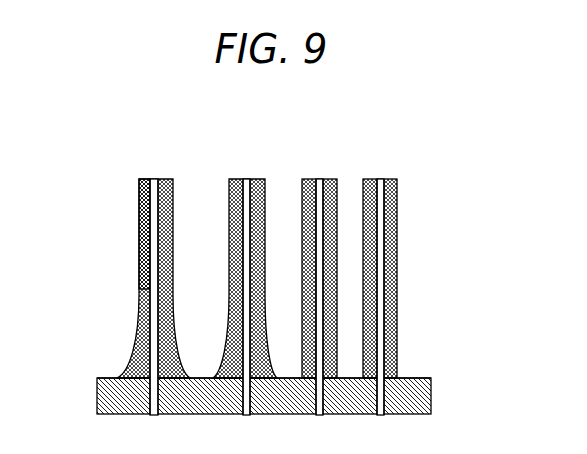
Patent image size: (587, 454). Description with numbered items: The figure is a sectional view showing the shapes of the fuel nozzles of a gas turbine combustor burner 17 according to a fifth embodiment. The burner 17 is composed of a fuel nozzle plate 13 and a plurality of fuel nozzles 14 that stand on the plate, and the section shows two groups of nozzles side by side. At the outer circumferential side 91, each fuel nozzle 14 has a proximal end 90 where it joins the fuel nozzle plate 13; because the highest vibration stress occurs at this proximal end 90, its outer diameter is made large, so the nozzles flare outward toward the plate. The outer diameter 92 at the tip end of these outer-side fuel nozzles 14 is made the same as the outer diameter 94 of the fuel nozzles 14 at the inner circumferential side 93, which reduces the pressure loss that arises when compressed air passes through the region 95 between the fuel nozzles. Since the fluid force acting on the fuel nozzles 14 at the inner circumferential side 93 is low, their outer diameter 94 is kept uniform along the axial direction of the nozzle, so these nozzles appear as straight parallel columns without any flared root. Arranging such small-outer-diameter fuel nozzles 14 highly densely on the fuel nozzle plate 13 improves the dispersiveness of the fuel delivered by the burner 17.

The fuel nozzle plate 13 is at (97, 393).
The fuel nozzle 14 is at (138, 183).
The burner 17 is at (434, 175).
The proximal end 90 is at (127, 373).
The outer circumferential side 91 is at (133, 162).
The outer diameter of tip end 92 is at (123, 288).
The inner circumferential side 93 is at (295, 165).
The outer diameter 94 is at (397, 215).
The region between the fuel nozzles 95 is at (198, 237).